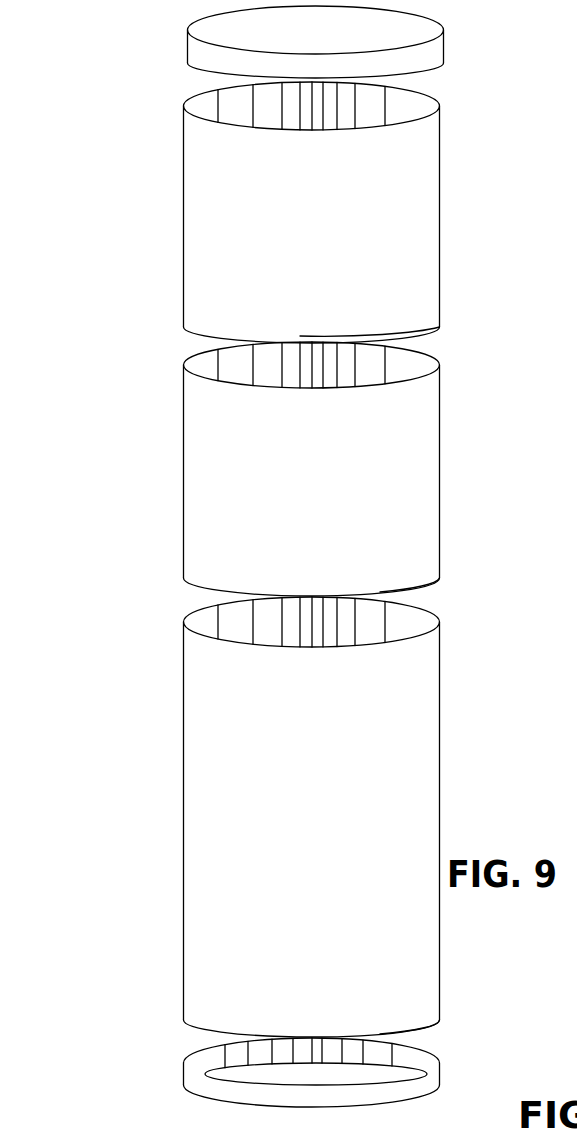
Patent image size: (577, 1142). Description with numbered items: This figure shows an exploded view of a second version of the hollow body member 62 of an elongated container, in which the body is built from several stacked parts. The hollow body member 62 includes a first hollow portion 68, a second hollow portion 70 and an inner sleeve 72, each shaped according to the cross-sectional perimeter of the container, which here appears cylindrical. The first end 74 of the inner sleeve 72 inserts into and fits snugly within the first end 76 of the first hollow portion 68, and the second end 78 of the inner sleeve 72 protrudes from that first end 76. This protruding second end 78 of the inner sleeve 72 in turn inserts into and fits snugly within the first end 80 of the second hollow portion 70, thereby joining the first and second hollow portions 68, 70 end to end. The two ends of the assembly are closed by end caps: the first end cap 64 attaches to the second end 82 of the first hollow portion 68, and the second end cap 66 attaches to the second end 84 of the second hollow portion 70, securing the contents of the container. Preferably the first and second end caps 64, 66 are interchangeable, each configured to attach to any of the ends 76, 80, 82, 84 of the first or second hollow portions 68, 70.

The hollow body member 62 is at (81, 417).
The first end cap 64 is at (444, 53).
The second end cap 66 is at (440, 1062).
The first hollow portion 68 is at (440, 237).
The second hollow portion 70 is at (438, 812).
The inner sleeve 72 is at (440, 468).
The first end of inner sleeve 74 is at (440, 364).
The first end of first hollow portion 76 is at (437, 328).
The second end of inner sleeve 78 is at (438, 577).
The first end of second hollow portion 80 is at (438, 620).
The second end of first hollow portion 82 is at (440, 106).
The second end of second hollow portion 84 is at (437, 1022).